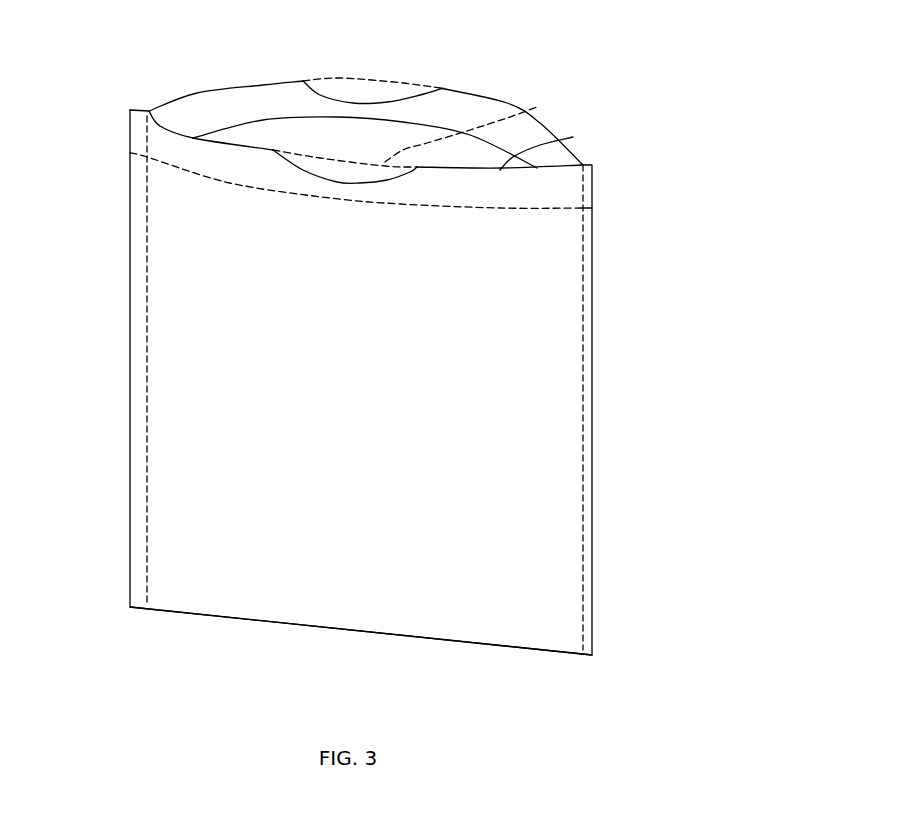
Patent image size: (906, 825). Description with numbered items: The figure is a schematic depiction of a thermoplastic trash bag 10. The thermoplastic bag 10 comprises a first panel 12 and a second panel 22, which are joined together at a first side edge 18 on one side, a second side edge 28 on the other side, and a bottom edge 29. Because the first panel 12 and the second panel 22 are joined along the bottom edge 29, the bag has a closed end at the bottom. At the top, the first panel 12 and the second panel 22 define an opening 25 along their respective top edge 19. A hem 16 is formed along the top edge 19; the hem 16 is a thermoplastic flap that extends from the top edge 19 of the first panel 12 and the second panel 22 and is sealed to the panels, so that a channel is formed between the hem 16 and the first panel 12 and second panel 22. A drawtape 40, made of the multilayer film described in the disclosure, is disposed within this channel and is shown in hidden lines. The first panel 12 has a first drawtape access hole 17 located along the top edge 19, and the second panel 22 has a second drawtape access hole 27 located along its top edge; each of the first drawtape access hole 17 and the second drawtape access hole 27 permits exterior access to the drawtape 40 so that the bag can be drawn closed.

The thermoplastic bag 10 is at (685, 85).
The first panel 12 is at (570, 473).
The hem 16 is at (238, 168).
The first drawtape access hole 17 is at (342, 183).
The first side edge 18 is at (130, 138).
The top edge 19 is at (573, 137).
The second panel 22 is at (305, 133).
The opening 25 is at (407, 133).
The second drawtape access hole 27 is at (365, 105).
The second side edge 28 is at (592, 190).
The bottom edge 29 is at (213, 613).
The drawtape 40 is at (403, 83).